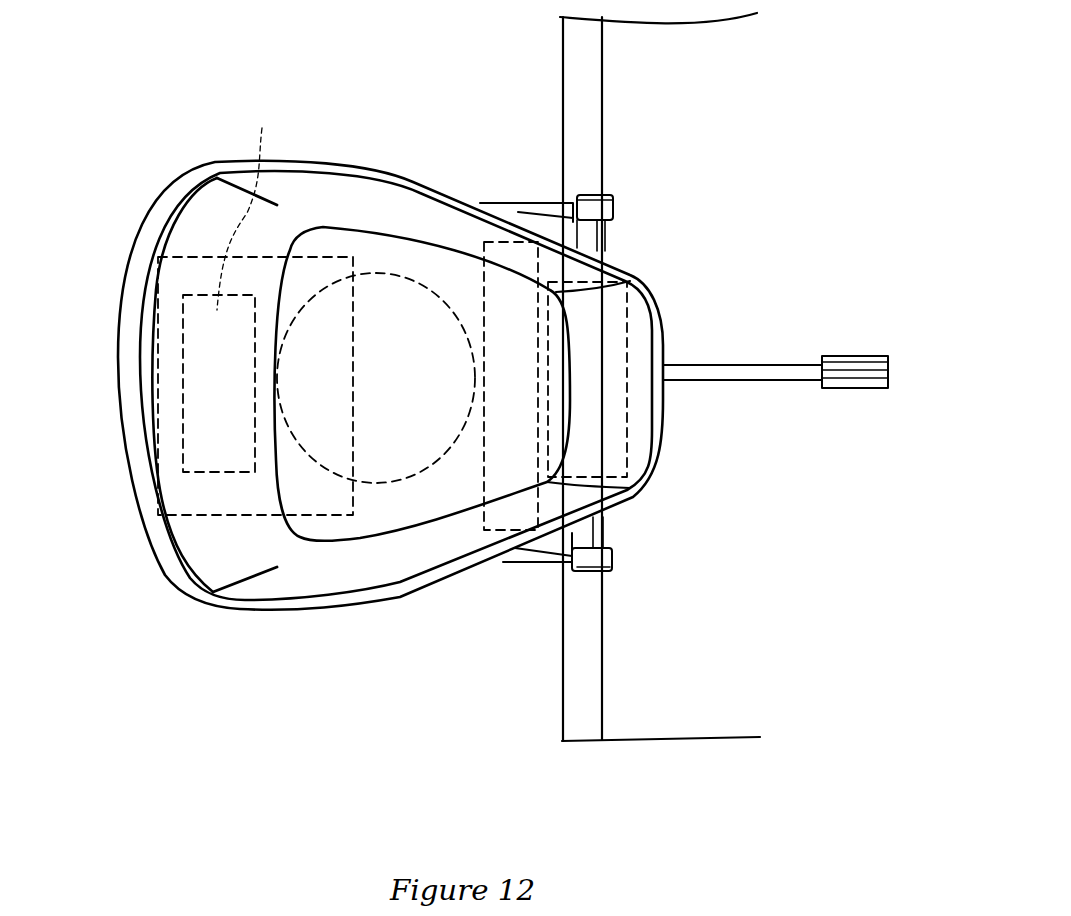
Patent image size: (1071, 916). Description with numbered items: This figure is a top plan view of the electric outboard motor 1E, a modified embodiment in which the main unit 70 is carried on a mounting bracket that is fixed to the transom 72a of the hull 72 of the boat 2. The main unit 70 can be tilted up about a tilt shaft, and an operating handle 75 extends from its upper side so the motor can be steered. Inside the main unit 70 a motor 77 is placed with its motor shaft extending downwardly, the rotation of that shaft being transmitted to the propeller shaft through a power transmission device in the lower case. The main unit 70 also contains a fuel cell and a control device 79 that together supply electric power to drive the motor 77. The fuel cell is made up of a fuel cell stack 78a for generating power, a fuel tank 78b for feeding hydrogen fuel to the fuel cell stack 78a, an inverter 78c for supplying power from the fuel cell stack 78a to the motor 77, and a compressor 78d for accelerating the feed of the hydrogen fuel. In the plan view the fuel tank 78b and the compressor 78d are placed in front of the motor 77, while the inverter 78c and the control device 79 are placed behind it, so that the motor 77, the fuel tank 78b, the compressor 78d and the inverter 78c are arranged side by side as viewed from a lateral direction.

The electric outboard motor 1E is at (528, 40).
The boat 2 is at (687, 173).
The main unit 70 is at (346, 607).
The hull 72 is at (757, 744).
The transom 72a is at (598, 649).
The operating handle 75 is at (735, 378).
The motor 77 is at (398, 282).
The fuel cell stack 78a is at (233, 500).
The fuel tank 78b is at (503, 518).
The inverter 78c is at (311, 206).
The compressor 78d is at (612, 313).
The control device 79 is at (162, 312).